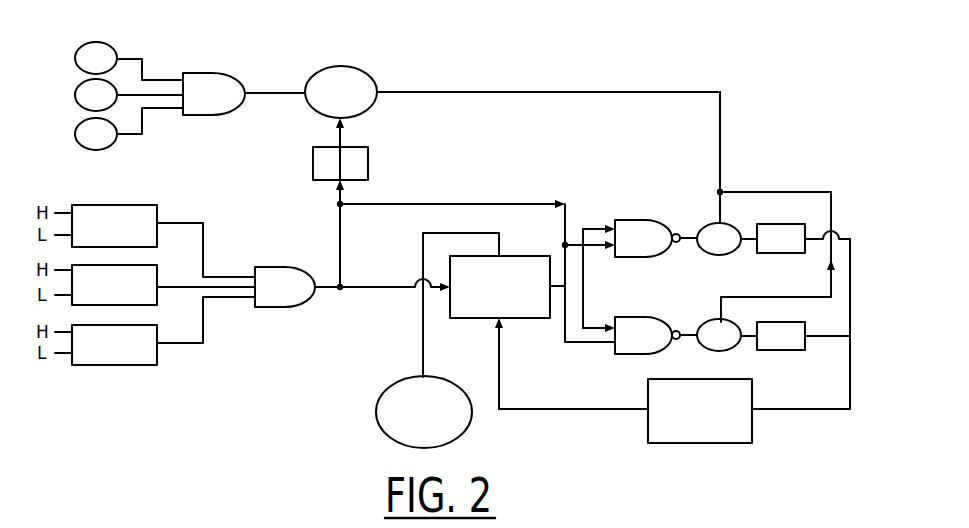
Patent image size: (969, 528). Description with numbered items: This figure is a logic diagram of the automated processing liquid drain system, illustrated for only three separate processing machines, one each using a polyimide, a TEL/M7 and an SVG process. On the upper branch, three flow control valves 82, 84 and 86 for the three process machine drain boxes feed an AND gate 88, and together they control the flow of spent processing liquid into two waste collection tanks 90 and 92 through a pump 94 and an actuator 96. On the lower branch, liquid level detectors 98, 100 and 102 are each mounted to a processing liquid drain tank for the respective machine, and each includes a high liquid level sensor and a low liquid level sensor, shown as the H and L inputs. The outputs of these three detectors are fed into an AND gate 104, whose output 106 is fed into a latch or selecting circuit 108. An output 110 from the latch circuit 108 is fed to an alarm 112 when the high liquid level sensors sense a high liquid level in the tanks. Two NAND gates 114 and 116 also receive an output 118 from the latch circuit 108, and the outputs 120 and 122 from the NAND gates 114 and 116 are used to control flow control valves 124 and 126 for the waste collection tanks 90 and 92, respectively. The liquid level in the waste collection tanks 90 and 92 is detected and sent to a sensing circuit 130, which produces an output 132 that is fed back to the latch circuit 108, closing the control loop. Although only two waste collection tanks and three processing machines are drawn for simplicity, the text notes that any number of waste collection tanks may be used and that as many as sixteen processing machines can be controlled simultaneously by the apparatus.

The flow control valve 82 is at (78, 44).
The flow control valve 84 is at (75, 88).
The flow control valve 86 is at (77, 127).
The AND gate 88 is at (207, 72).
The waste collection tank 90 is at (780, 224).
The waste collection tank 92 is at (808, 317).
The pump 94 is at (315, 70).
The actuator 96 is at (313, 158).
The liquid level detector 98 is at (108, 205).
The liquid level detector 100 is at (157, 273).
The liquid level detector 102 is at (125, 365).
The AND gate 104 is at (268, 263).
The output 106 is at (370, 283).
The latch circuit 108 is at (518, 253).
The output 110 is at (445, 233).
The alarm 112 is at (395, 380).
The NAND gate 114 is at (625, 217).
The NAND gate 116 is at (635, 315).
The output 118 is at (560, 290).
The output 120 is at (687, 233).
The output 122 is at (692, 330).
The flow control valve 124 is at (728, 223).
The flow control valve 126 is at (730, 323).
The sensing circuit 130 is at (715, 443).
The output 132 is at (570, 417).